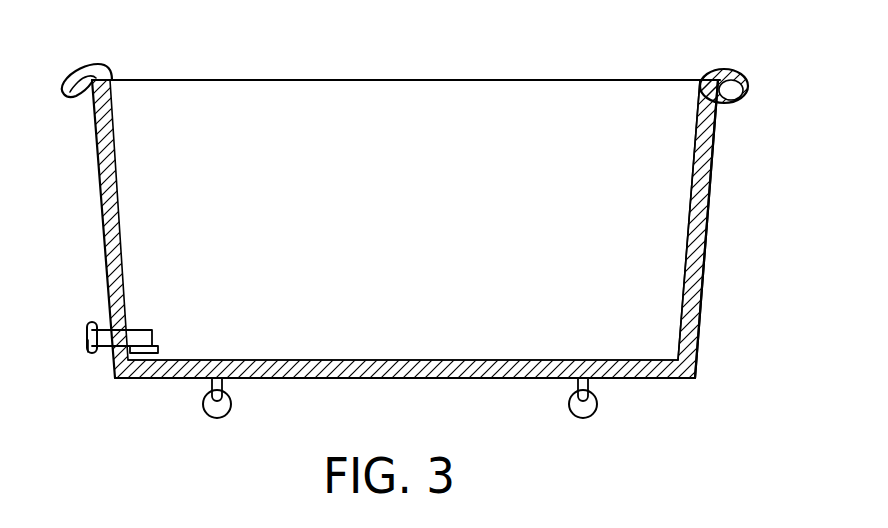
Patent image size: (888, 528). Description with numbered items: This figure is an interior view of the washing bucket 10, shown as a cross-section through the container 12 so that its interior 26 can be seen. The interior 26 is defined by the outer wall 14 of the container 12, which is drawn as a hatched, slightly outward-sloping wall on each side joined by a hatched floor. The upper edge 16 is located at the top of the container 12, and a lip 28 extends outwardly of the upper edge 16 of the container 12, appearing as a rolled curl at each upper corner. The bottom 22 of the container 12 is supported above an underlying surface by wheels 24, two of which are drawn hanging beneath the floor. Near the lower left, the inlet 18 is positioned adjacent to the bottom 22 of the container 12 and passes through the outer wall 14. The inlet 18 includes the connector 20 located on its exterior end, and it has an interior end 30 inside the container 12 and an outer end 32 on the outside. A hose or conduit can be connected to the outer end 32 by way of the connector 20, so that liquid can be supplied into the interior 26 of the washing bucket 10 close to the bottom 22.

The washing bucket 10 is at (802, 190).
The container 12 is at (706, 238).
The outer wall 14 is at (700, 291).
The upper edge 16 is at (383, 80).
The inlet 18 is at (136, 331).
The connector 20 is at (90, 330).
The bottom 22 is at (218, 362).
The wheels 24 is at (232, 405).
The interior 26 is at (682, 183).
The lip 28 is at (748, 88).
The interior end 30 is at (156, 334).
The outer end 32 is at (90, 350).